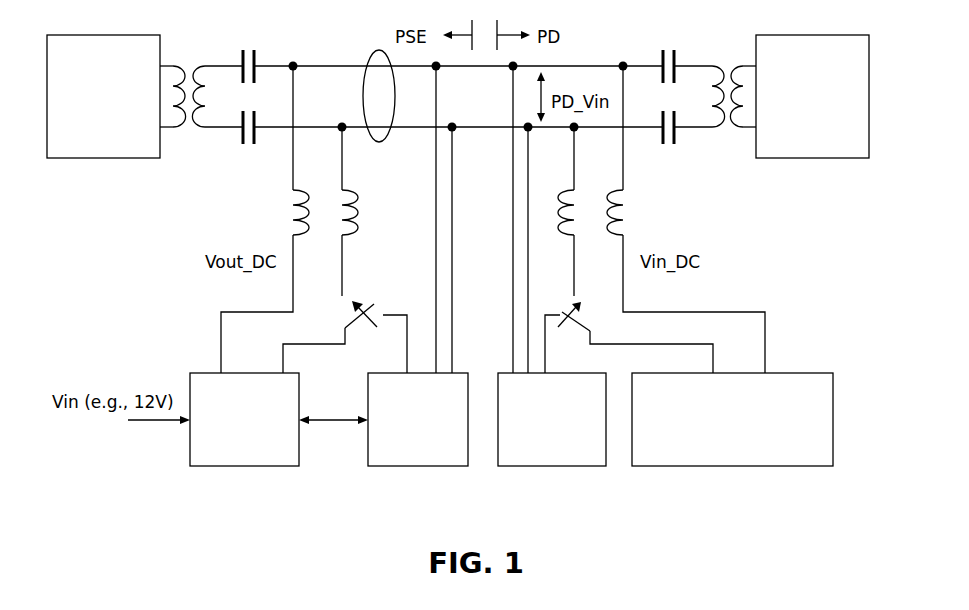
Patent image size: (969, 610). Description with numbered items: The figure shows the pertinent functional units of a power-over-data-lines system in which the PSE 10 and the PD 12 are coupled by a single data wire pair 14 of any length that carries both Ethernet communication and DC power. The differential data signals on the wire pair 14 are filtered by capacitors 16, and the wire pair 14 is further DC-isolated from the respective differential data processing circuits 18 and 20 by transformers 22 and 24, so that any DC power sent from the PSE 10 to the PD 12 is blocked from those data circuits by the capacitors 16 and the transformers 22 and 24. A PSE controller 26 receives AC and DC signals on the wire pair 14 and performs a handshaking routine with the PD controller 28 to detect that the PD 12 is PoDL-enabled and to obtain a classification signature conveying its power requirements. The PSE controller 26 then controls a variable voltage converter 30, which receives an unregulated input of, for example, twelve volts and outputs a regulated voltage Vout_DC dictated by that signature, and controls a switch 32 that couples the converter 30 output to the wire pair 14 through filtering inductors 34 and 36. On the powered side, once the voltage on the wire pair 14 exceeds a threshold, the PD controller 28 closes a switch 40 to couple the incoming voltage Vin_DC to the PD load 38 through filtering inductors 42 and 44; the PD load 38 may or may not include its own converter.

The PSE 10 is at (320, 43).
The PD 12 is at (589, 45).
The single data wire pair 14 is at (377, 50).
The capacitors 16 is at (248, 48).
The differential data processing circuit 18 is at (102, 158).
The differential data processing circuit 20 is at (818, 158).
The transformer 22 is at (192, 58).
The transformer 24 is at (725, 68).
The PSE controller 26 is at (390, 466).
The PD controller 28 is at (575, 466).
The variable voltage converter 30 is at (262, 466).
The switch 32 is at (383, 310).
The filtering inductor 34 is at (307, 200).
The filtering inductor 36 is at (365, 207).
The PD load 38 is at (778, 466).
The switch 40 is at (587, 313).
The filtering inductor 42 is at (558, 193).
The filtering inductor 44 is at (613, 213).